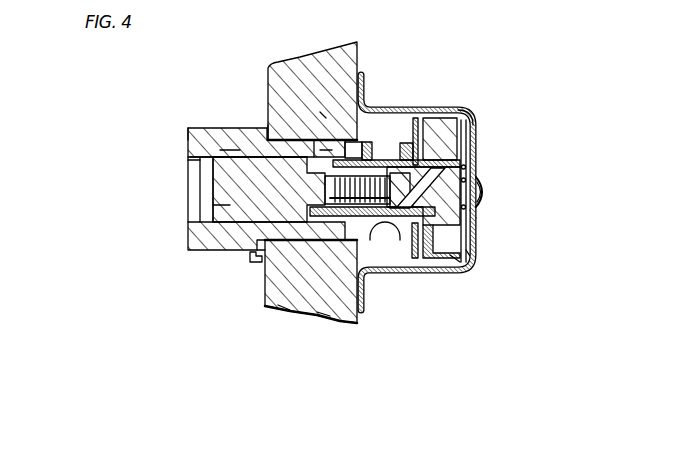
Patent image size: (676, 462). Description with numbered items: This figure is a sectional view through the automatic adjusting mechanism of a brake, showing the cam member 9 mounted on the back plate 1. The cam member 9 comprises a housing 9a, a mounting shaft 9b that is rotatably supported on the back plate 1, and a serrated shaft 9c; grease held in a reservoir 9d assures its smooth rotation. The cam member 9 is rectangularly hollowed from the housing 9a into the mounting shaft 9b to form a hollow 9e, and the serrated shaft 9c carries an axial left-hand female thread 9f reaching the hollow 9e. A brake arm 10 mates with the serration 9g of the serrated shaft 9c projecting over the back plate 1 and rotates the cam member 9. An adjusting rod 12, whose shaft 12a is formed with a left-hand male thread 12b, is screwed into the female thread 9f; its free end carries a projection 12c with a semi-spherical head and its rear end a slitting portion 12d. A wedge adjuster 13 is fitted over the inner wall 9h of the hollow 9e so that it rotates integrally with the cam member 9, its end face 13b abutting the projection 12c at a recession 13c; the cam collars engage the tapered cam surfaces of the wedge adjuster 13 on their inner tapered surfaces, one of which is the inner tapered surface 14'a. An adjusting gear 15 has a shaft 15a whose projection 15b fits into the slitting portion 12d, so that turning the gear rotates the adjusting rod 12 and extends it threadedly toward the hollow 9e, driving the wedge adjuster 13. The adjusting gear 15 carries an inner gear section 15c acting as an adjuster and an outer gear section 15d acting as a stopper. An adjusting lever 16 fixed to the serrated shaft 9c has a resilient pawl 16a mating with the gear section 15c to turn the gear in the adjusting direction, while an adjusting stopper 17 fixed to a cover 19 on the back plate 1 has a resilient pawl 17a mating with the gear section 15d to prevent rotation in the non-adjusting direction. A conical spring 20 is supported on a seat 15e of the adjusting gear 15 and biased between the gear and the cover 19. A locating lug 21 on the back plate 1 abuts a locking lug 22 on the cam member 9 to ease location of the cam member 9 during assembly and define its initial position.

The back plate 1 is at (342, 83).
The cam member 9 is at (182, 226).
The housing 9a is at (188, 127).
The mounting shaft 9b is at (327, 155).
The serrated shaft 9c is at (373, 160).
The reservoir 9d is at (283, 308).
The hollow 9e is at (195, 177).
The left-hand female thread 9f is at (322, 115).
The serration 9g is at (410, 113).
The inner wall 9h is at (233, 153).
The brake arm 10 is at (388, 240).
The adjusting rod 12 is at (352, 313).
The shaft 12a is at (240, 156).
The left-hand male thread 12b is at (262, 136).
The projection 12c is at (328, 255).
The slitting portion 12d is at (462, 277).
The wedge adjuster 13 is at (215, 226).
The end face 13b is at (313, 243).
The recession 13c is at (230, 213).
The inner tapered surface 14'a is at (158, 189).
The adjusting gear 15 is at (477, 237).
The shaft 15a is at (477, 177).
The projection 15b is at (484, 188).
The gear section 15c is at (428, 273).
The gear section 15d is at (460, 265).
The seat 15e is at (477, 215).
The adjusting lever 16 is at (477, 143).
The resilient pawl 16a is at (415, 148).
The adjusting stopper 17 is at (476, 132).
The resilient pawl 17a is at (458, 105).
The cover 19 is at (475, 250).
The conical spring 20 is at (477, 162).
The locating lug 21 is at (250, 262).
The locking lug 22 is at (255, 262).